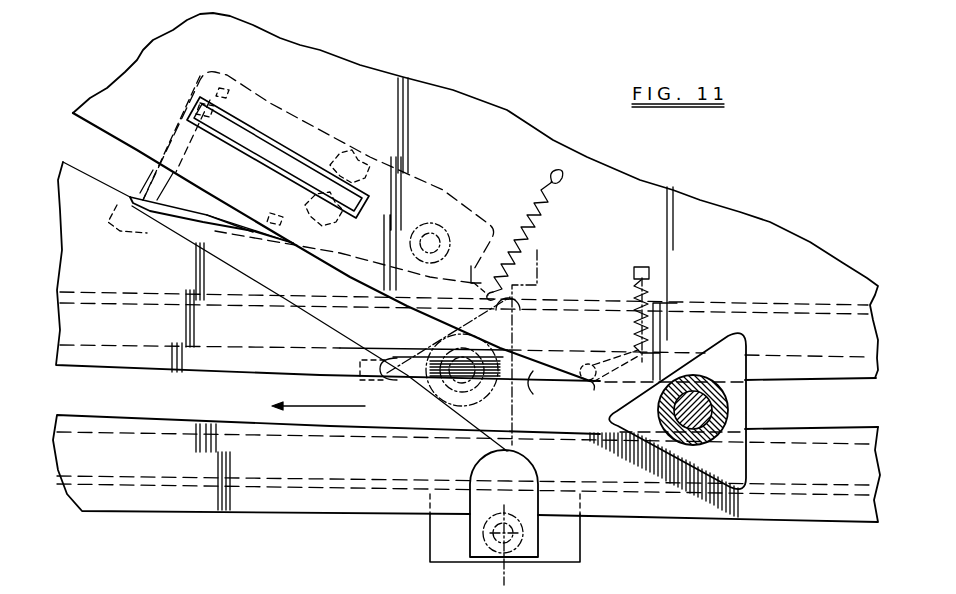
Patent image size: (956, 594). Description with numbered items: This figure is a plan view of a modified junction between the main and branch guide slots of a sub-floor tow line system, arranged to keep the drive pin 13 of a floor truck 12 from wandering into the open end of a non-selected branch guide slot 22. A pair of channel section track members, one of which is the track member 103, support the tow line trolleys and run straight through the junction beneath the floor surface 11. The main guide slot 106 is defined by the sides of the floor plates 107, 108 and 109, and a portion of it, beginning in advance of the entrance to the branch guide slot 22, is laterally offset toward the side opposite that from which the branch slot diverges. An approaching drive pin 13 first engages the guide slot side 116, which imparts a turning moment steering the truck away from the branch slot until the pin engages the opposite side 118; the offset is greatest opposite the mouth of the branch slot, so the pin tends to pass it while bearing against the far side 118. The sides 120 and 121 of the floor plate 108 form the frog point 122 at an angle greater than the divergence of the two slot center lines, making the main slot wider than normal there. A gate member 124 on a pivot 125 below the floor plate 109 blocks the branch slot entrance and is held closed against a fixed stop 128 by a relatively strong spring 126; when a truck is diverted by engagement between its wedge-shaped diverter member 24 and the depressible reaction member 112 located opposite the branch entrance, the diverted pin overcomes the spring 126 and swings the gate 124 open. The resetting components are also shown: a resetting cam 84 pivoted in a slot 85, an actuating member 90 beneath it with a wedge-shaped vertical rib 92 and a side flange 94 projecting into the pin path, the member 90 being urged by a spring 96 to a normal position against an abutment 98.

The surface 11 is at (731, 253).
The floor truck 12 is at (492, 574).
The drive pin 13 is at (700, 412).
The branch line guide slot 22 is at (277, 282).
The wedge-shaped diverter member 24 is at (733, 370).
The resetting cam 84 is at (295, 160).
The slot 85 is at (265, 136).
The actuating member 90 is at (455, 197).
The wedge-shaped vertical rib 92 is at (188, 164).
The side flange 94 is at (207, 217).
The spring 96 is at (548, 218).
The abutment 98 is at (120, 227).
The channel section track member 103 is at (170, 484).
The main guide slot 106 is at (857, 416).
The floor plate 107 is at (262, 502).
The floor plate 108 is at (272, 339).
The floor plate 109 is at (771, 223).
The reaction member 112 is at (532, 527).
The guide slot side 116 is at (813, 377).
The opposite side of the main guide slot 118 is at (783, 429).
The side of the floor plate 120 is at (410, 380).
The side of the floor plate 121 is at (412, 357).
The frog point 122 is at (427, 322).
The gate member 124 is at (531, 380).
The pivot 125 is at (589, 362).
The spring 126 is at (664, 280).
The fixed stop 128 is at (335, 383).